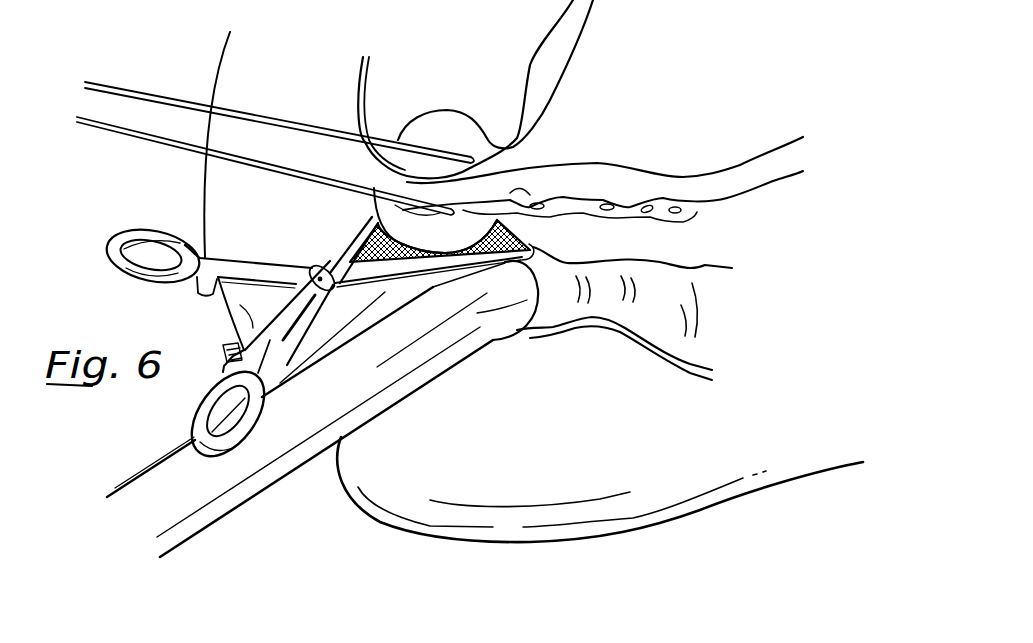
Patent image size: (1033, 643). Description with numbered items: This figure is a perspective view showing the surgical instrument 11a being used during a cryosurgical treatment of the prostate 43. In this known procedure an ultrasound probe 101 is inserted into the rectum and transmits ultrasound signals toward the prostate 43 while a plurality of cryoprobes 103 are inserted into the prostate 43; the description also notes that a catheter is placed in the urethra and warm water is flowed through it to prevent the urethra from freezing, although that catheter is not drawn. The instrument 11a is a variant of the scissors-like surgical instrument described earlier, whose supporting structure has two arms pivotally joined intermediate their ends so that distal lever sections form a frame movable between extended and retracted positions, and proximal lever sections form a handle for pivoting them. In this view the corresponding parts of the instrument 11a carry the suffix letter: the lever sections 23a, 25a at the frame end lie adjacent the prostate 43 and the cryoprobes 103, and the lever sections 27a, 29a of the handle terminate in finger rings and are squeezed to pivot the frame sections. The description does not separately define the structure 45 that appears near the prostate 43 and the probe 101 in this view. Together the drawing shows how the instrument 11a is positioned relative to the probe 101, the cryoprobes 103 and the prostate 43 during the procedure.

The cryoprobes 103 is at (132, 128).
The surgical instrument 11a is at (310, 346).
The first handle arm 29a is at (255, 272).
The second handle arm 27a is at (270, 340).
The mesh patch 23a is at (348, 259).
The applicator shaft tip 25a is at (484, 270).
The prostate 43 is at (458, 121).
The spermatic cord 45 is at (565, 293).
The ultrasound probe 101 is at (322, 418).